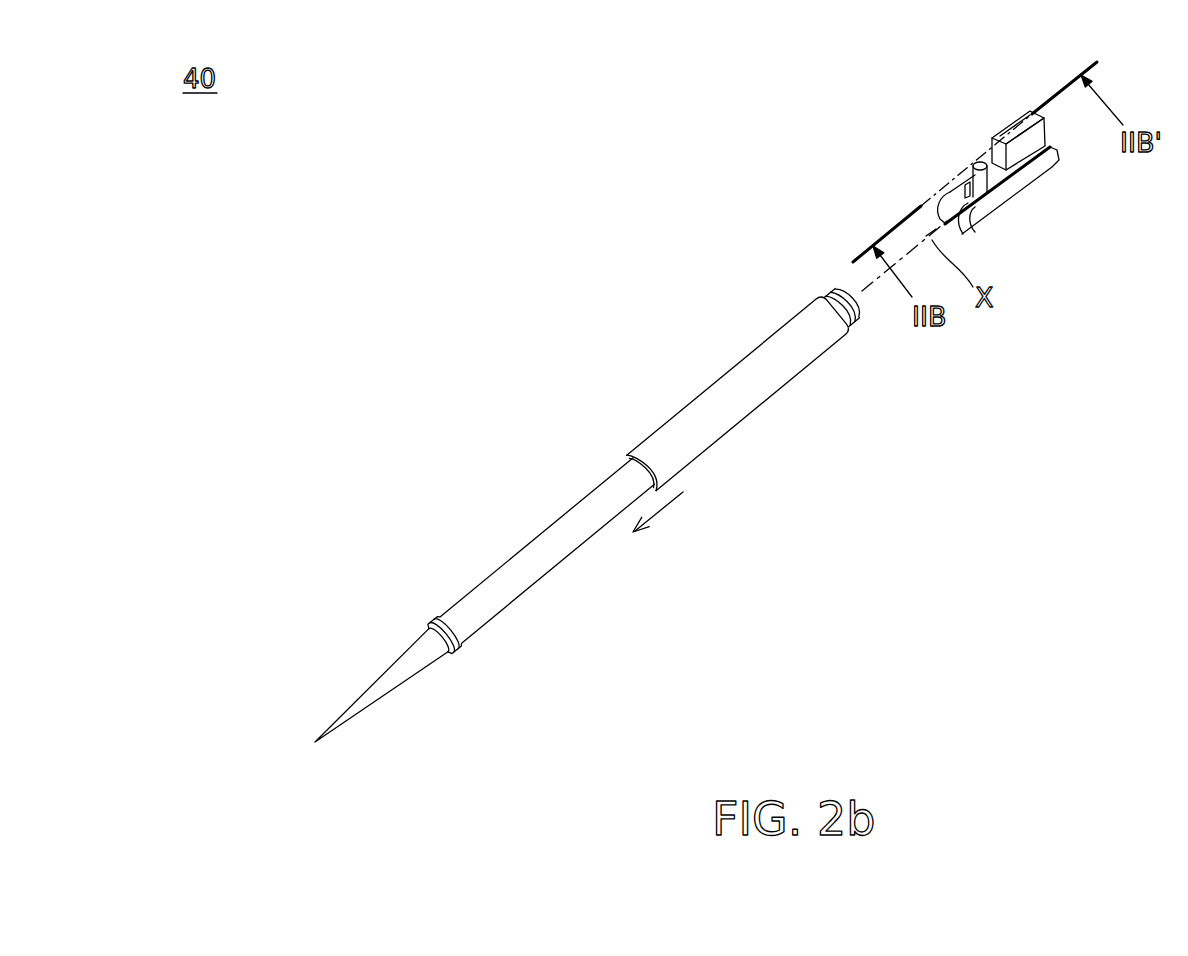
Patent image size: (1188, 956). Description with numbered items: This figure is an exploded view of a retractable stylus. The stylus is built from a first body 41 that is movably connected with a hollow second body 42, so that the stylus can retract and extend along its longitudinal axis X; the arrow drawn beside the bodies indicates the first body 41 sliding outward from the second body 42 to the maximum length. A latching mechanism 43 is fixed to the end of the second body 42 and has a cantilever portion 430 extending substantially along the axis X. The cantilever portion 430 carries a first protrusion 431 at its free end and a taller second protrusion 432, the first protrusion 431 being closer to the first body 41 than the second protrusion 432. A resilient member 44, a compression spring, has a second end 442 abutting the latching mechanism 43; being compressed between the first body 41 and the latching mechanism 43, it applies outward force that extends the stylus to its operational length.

The first body 41 is at (479, 606).
The second body 42 is at (739, 392).
The latching mechanism 43 is at (1000, 138).
The resilient member 44 is at (850, 301).
The cantilever portion 430 is at (1007, 170).
The first protrusion 431 is at (978, 158).
The second protrusion 432 is at (1013, 120).
The second end 442 is at (843, 307).